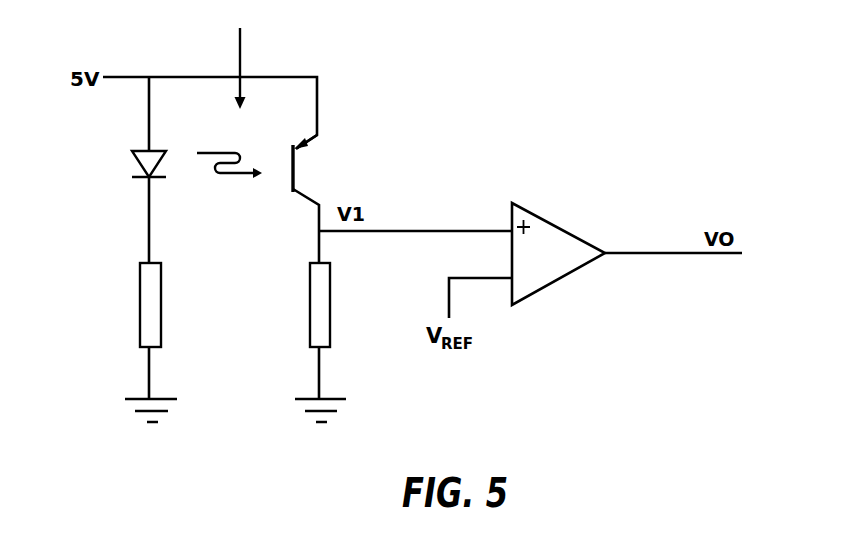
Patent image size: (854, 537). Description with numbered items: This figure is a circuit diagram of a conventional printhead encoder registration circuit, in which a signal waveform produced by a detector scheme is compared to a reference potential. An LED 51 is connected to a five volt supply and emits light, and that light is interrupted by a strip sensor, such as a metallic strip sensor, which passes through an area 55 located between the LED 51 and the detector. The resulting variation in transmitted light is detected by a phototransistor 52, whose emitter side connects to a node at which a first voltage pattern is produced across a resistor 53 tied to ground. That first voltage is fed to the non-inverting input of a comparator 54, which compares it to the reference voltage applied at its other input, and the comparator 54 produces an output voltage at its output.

The LED 51 is at (137, 159).
The phototransistor 52 is at (298, 173).
The resistor 53 is at (308, 303).
The comparator 54 is at (552, 243).
The area 55 is at (243, 57).